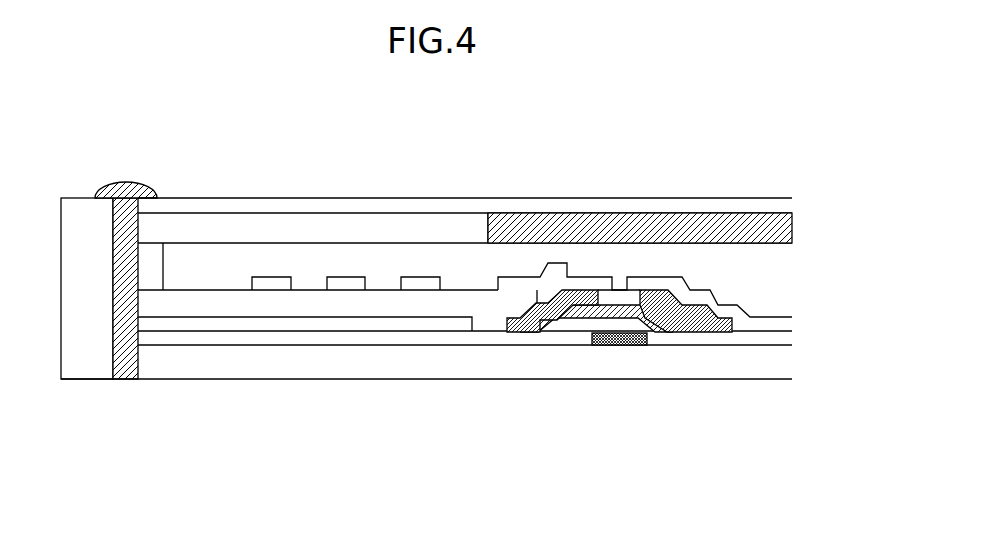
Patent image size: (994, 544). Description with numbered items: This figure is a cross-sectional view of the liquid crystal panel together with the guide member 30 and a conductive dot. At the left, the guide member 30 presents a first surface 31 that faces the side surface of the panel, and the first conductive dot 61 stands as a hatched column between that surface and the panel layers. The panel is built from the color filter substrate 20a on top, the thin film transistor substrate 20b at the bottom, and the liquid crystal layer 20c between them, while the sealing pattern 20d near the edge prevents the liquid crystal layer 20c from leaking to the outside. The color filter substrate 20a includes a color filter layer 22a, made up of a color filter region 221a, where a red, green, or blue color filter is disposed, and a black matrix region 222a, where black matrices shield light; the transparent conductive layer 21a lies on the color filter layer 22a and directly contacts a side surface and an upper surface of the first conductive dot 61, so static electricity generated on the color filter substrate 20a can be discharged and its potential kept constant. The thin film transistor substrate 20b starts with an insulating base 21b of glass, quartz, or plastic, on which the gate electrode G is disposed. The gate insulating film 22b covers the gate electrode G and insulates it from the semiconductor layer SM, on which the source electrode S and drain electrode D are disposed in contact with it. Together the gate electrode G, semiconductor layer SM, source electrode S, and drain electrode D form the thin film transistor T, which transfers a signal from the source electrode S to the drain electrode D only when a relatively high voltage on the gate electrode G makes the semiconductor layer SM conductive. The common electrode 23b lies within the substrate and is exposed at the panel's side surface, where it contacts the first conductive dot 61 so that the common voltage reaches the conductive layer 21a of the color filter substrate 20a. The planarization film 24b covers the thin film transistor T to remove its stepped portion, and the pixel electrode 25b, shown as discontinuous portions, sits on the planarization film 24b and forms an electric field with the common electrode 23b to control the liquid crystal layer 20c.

The guide member 30 is at (72, 341).
The first surface 31 is at (113, 287).
The first conductive dot 61 is at (122, 189).
The color filter substrate 20a is at (802, 198).
The conductive layer 21a is at (258, 203).
The color filter layer 22a is at (610, 168).
The color filter region 221a is at (430, 220).
The black matrix region 222a is at (552, 222).
The sealing pattern 20d is at (150, 248).
The liquid crystal layer 20c is at (778, 266).
The thin film transistor substrate 20b is at (458, 372).
The base 21b is at (227, 368).
The gate insulating film 22b is at (280, 337).
The common electrode 23b is at (335, 323).
The planarization film 24b is at (387, 307).
The pixel electrode 25b is at (440, 282).
The thin film transistor T is at (619, 386).
The drain electrode D is at (522, 350).
The source electrode S is at (712, 330).
The semiconductor layer SM is at (656, 345).
The gate electrode G is at (607, 340).